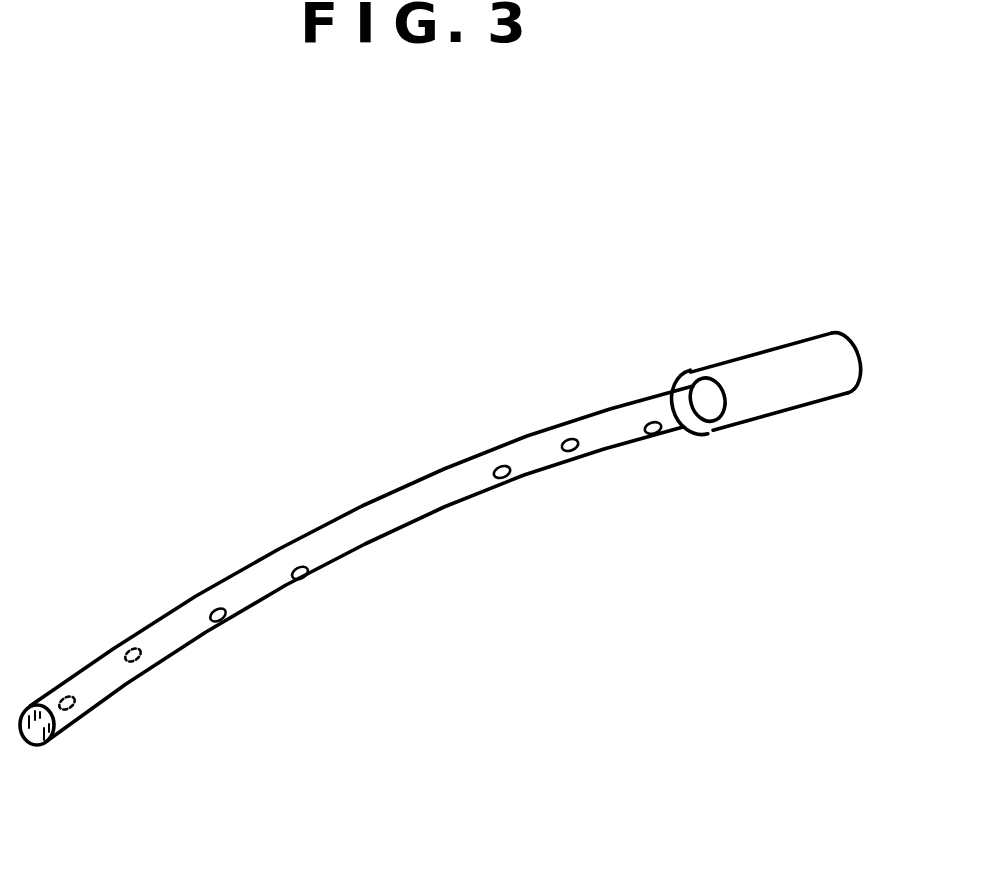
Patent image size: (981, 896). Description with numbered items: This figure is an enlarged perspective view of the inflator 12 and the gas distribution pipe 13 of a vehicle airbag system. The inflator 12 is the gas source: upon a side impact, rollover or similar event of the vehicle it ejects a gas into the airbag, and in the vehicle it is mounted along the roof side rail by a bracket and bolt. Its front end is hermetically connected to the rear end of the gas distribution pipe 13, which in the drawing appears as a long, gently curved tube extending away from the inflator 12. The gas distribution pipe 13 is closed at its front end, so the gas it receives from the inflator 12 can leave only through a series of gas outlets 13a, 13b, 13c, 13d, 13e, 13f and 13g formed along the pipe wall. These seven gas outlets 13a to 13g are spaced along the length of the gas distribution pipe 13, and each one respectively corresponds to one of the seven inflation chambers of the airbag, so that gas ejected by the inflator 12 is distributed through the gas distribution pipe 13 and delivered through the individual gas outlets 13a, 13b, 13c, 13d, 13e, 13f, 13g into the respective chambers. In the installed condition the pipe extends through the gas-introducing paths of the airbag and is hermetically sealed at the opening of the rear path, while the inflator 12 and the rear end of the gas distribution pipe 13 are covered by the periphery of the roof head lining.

The inflator 12 is at (762, 372).
The gas distribution pipe 13 is at (367, 513).
The gas outlet 13a is at (70, 710).
The gas outlet 13b is at (137, 662).
The gas outlet 13c is at (221, 621).
The gas outlet 13d is at (302, 579).
The gas outlet 13e is at (503, 478).
The gas outlet 13f is at (570, 451).
The gas outlet 13g is at (652, 434).